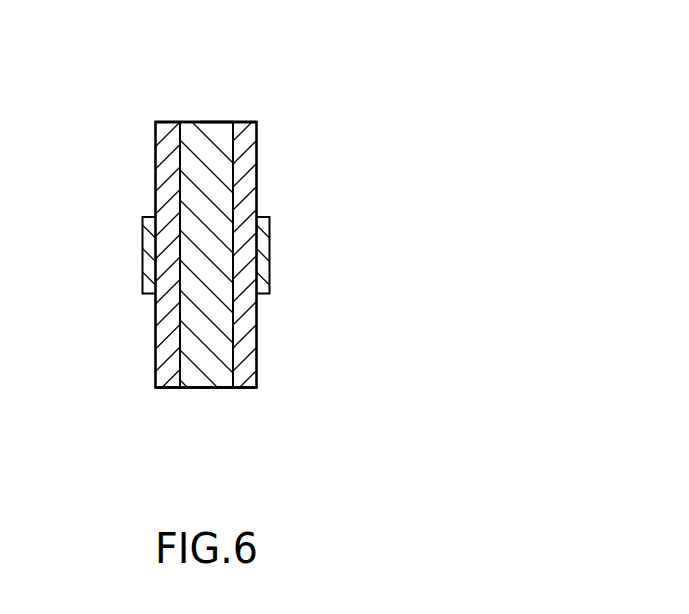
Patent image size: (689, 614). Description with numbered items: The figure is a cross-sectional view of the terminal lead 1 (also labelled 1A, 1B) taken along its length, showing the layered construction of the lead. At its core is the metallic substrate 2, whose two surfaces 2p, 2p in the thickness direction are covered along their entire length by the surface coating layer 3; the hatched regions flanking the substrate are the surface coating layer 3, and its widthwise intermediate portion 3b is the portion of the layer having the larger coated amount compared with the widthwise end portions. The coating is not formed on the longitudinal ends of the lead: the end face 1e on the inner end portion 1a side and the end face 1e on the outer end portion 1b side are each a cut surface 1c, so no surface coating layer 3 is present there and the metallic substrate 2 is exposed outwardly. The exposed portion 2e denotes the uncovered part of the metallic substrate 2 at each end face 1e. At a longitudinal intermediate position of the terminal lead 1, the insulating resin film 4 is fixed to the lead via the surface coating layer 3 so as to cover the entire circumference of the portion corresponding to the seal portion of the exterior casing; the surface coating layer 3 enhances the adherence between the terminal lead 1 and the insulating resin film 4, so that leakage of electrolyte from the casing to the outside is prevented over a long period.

The terminal lead 1 is at (332, 214).
The bearing 1A is at (206, 255).
The bearing 1B is at (206, 255).
The inner end portion 1a is at (213, 345).
The outer end portion 1b is at (213, 185).
The cut surface 1c is at (187, 121).
The end face 1e is at (176, 257).
The metallic substrate 2 is at (207, 155).
The exposed portion 2e is at (212, 121).
The surface 2p is at (173, 193).
The surface coating layer 3 is at (163, 360).
The widthwise intermediate portion 3b is at (165, 322).
The insulating resin film 4 is at (148, 247).